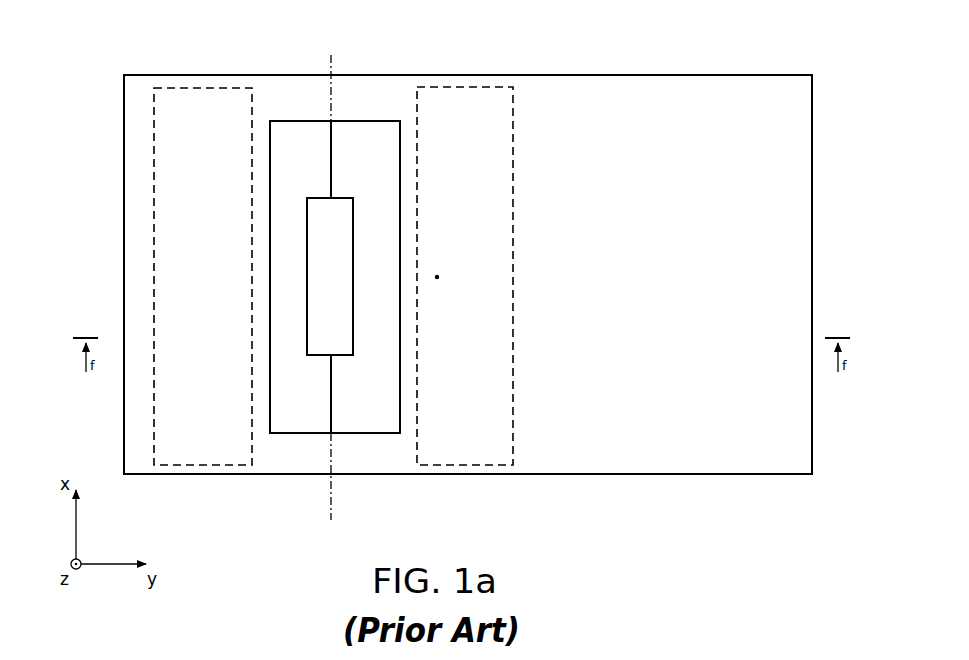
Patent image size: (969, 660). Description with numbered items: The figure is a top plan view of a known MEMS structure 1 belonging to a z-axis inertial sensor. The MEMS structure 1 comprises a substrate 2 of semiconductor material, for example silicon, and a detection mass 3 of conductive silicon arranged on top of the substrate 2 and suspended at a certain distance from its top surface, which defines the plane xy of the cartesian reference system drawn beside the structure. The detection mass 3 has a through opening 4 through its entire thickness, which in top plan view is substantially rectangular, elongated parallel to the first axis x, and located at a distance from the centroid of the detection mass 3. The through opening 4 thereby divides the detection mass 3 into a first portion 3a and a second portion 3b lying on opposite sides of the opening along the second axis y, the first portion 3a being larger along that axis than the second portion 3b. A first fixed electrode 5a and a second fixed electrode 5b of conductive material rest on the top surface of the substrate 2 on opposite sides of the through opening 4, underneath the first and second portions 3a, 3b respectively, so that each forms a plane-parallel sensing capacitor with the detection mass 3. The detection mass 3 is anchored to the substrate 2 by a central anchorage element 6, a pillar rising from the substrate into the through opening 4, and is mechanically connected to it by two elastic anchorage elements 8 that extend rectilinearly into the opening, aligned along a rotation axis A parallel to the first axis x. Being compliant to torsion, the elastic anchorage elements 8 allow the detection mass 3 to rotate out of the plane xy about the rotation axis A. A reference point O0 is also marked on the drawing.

The MEMS structure 1 is at (572, 489).
The substrate 2 is at (362, 416).
The detection mass 3 is at (780, 175).
The first portion 3a is at (677, 95).
The second portion 3b is at (135, 460).
The through opening 4 is at (336, 128).
The first fixed electrode 5a is at (497, 475).
The second fixed electrode 5b is at (221, 466).
The central anchorage element 6 is at (346, 247).
The elastic anchorage elements 8 is at (334, 177).
The reference point O0 is at (439, 274).
The rotation axis A is at (333, 501).